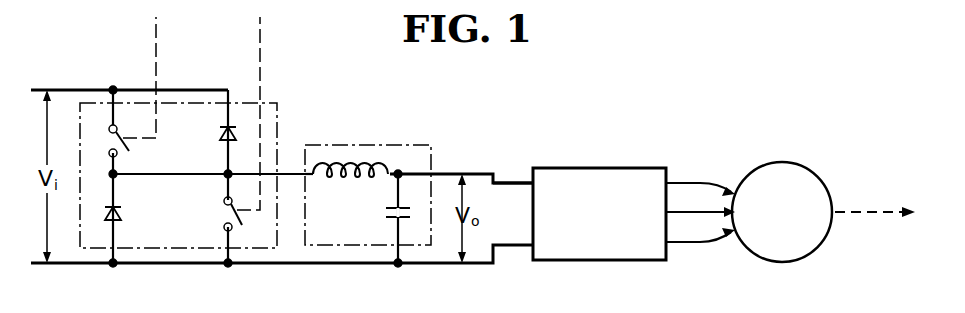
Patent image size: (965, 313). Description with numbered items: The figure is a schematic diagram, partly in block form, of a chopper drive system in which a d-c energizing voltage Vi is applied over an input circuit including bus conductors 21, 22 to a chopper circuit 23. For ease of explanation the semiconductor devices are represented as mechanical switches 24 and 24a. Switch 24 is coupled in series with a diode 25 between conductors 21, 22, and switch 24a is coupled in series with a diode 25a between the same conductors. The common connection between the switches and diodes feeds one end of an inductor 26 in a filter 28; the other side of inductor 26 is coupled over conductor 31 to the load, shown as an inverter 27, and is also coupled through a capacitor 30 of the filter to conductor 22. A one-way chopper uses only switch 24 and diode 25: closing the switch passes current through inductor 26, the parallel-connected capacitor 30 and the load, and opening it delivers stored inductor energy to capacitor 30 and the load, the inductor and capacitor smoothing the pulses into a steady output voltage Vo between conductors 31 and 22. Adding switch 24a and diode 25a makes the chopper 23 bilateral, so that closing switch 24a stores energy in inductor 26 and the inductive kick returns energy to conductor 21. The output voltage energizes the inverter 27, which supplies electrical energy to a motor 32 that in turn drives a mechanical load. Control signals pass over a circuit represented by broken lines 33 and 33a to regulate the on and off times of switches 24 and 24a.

The bus conductor 21 is at (72, 90).
The bus conductor 22 is at (66, 264).
The chopper circuit 23 is at (277, 113).
The switch 24 is at (130, 143).
The switch 24a is at (233, 214).
The diode 25 is at (118, 214).
The diode 25a is at (222, 134).
The inductor 26 is at (346, 184).
The inverter 27 is at (634, 202).
The filter 28 is at (403, 145).
The capacitor 30 is at (383, 222).
The conductor 31 is at (514, 183).
The motor 32 is at (823, 201).
The broken line 33 is at (156, 63).
The broken line 33a is at (260, 63).